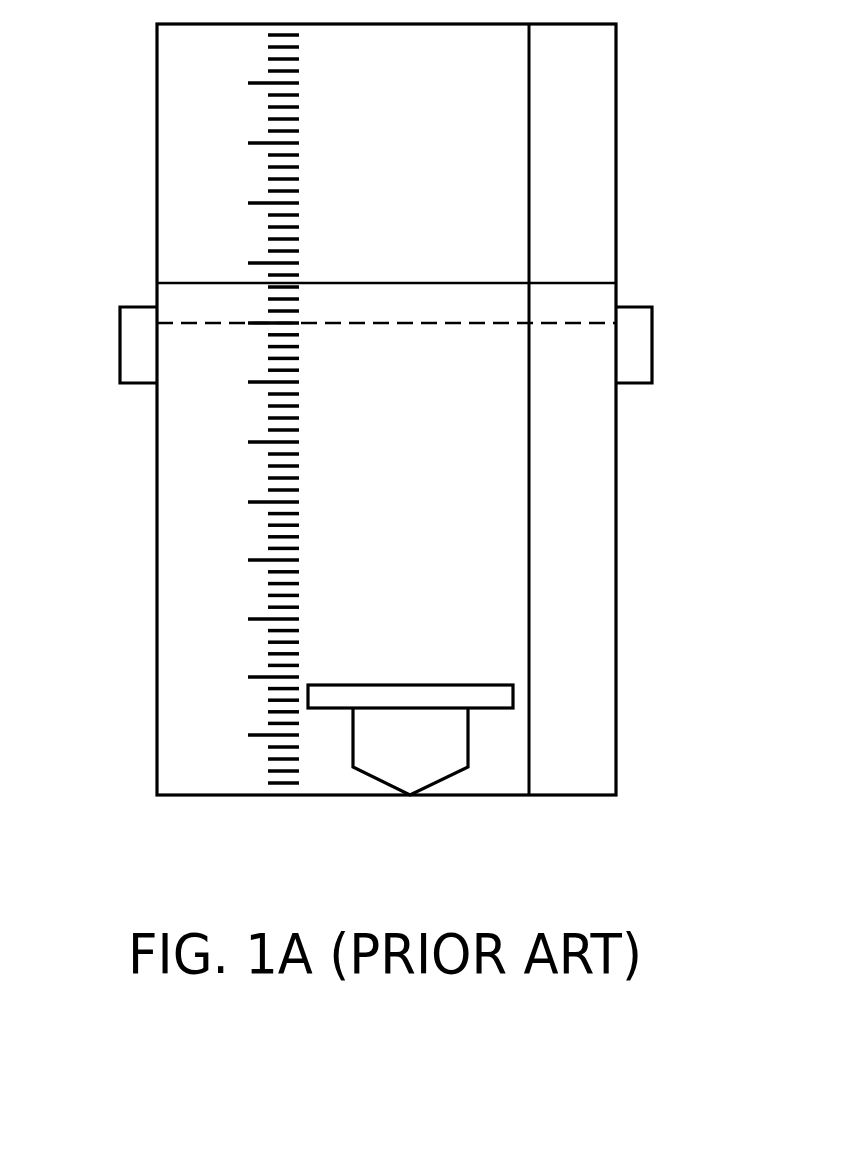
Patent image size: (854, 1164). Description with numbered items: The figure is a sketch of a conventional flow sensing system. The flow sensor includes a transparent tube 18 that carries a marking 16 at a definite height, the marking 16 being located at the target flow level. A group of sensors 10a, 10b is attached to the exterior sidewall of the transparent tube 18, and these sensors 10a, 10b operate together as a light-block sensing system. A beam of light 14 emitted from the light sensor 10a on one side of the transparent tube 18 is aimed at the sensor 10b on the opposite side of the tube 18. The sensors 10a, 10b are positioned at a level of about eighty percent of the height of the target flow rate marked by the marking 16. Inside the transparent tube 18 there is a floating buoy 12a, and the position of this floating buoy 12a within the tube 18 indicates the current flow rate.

The light sensor 10a is at (143, 385).
The sensor 10b is at (636, 385).
The wafer holder 12a is at (513, 697).
The beam of light 14 is at (578, 319).
The marking 16 is at (196, 278).
The transparent tube 18 is at (616, 668).